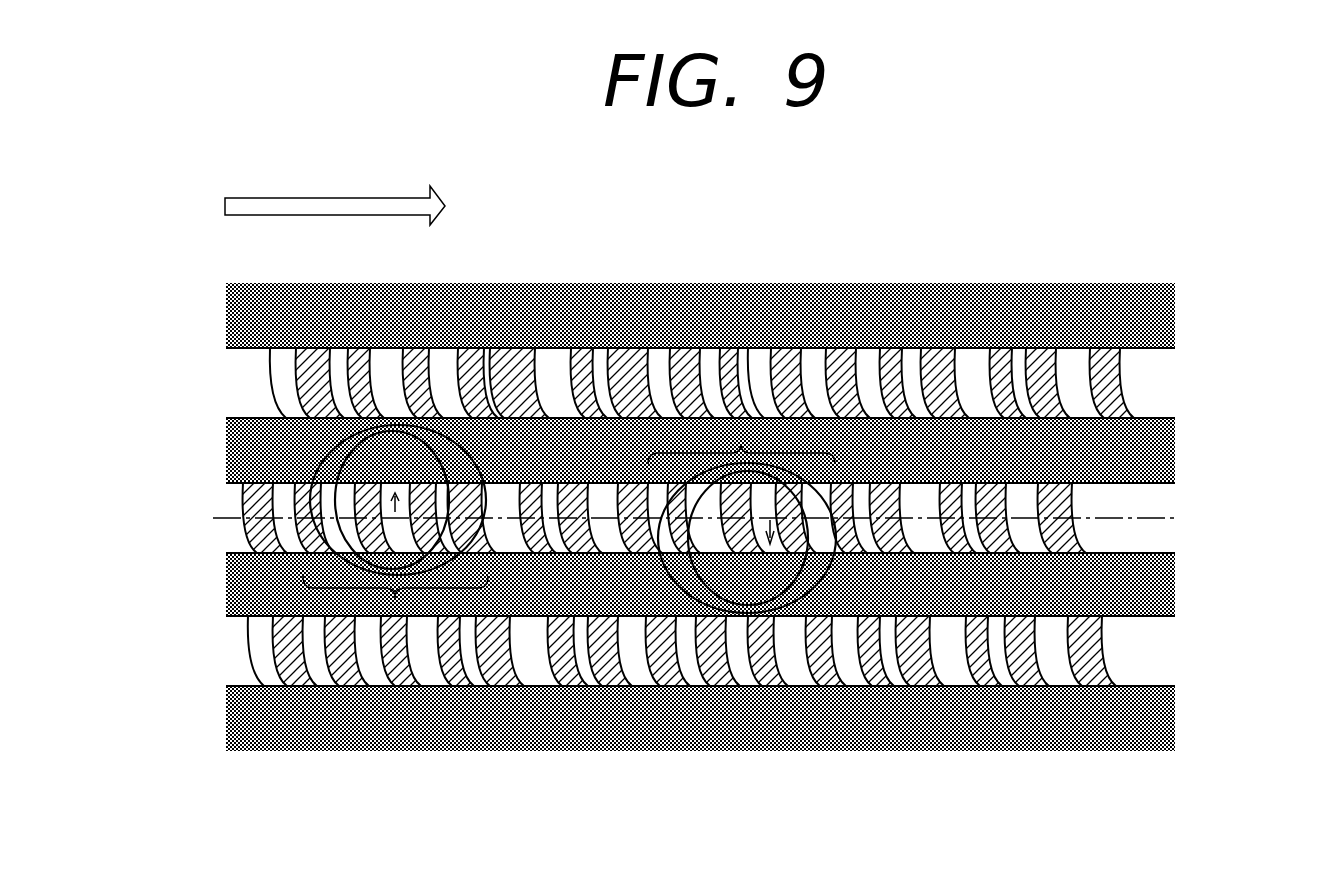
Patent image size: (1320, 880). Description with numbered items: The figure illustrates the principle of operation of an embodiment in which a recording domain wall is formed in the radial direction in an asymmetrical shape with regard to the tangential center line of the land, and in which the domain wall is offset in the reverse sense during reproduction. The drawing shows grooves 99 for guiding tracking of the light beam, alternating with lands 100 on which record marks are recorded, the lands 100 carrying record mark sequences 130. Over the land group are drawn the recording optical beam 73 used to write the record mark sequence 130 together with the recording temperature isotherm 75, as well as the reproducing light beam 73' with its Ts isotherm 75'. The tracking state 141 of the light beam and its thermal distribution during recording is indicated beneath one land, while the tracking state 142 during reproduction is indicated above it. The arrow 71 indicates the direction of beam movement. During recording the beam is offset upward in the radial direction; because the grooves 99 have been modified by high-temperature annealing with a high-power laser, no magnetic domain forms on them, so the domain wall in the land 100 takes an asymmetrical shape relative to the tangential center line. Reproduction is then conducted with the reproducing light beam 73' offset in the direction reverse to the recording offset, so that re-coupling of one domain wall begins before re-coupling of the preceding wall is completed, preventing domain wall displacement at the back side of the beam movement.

The flow direction arrow 71 is at (408, 190).
The recording optical beam 73 is at (414, 398).
The recording temperature isotherm 75 is at (376, 400).
The reproducing light beam 73' is at (761, 638).
The Ts isotherm 75' is at (724, 651).
The groove 99 is at (227, 320).
The land 100 is at (210, 342).
The record mark sequence 130 is at (1157, 375).
The tracking state during recording 141 is at (387, 590).
The tracking state during reproduction 142 is at (733, 436).